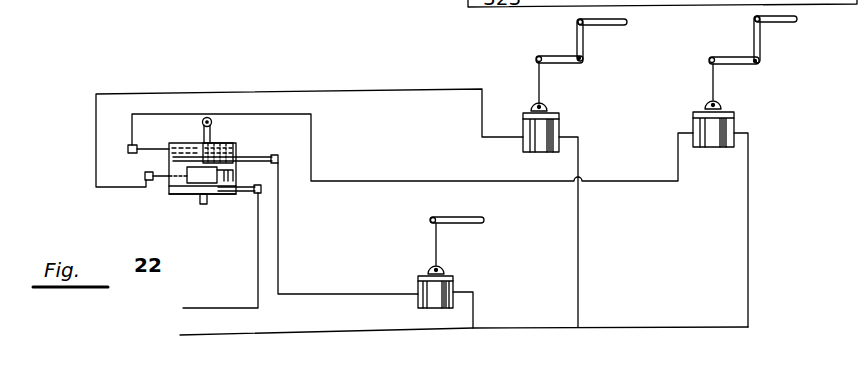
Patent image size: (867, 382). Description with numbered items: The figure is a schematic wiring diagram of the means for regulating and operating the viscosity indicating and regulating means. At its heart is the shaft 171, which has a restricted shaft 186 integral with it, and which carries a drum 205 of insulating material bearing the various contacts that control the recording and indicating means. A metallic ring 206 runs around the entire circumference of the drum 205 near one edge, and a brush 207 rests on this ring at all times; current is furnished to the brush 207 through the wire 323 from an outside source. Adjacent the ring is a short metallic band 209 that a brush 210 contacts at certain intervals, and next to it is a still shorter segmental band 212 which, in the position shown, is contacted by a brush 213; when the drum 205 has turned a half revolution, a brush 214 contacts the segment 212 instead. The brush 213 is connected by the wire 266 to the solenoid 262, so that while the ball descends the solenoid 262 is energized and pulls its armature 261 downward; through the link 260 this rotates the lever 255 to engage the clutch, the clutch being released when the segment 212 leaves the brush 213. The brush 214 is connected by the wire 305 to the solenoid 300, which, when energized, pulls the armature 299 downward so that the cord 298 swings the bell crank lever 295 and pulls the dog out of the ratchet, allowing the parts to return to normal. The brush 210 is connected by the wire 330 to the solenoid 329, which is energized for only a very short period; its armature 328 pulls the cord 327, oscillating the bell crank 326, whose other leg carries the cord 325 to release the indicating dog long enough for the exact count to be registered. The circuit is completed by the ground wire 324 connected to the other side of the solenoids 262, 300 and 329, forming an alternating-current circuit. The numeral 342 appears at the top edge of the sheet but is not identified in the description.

The shaft 171 is at (208, 117).
The restricted shaft 186 is at (205, 206).
The drum 205 is at (181, 143).
The metallic ring 206 is at (170, 195).
The brush 207 is at (256, 193).
The short metallic band 209 is at (219, 171).
The brush 210 is at (157, 169).
The segmental band 212 is at (206, 143).
The brush 213 is at (254, 156).
The brush 214 is at (161, 139).
The lever 255 is at (488, 223).
The link 260 is at (438, 250).
The armature 261 is at (445, 270).
The solenoid 262 is at (418, 307).
The wire 266 is at (384, 293).
The bell crank lever 295 is at (762, 40).
The cord 298 is at (715, 84).
The armature 299 is at (722, 105).
The solenoid 300 is at (736, 124).
The wire 305 is at (469, 179).
The wire 323 is at (244, 305).
The ground wire 324 is at (301, 332).
The cord 325 is at (626, 22).
The bell crank 326 is at (588, 53).
The cord 327 is at (540, 90).
The armature 328 is at (534, 105).
The solenoid 329 is at (560, 124).
The wire 330 is at (386, 89).
The control element 342 is at (414, 6).